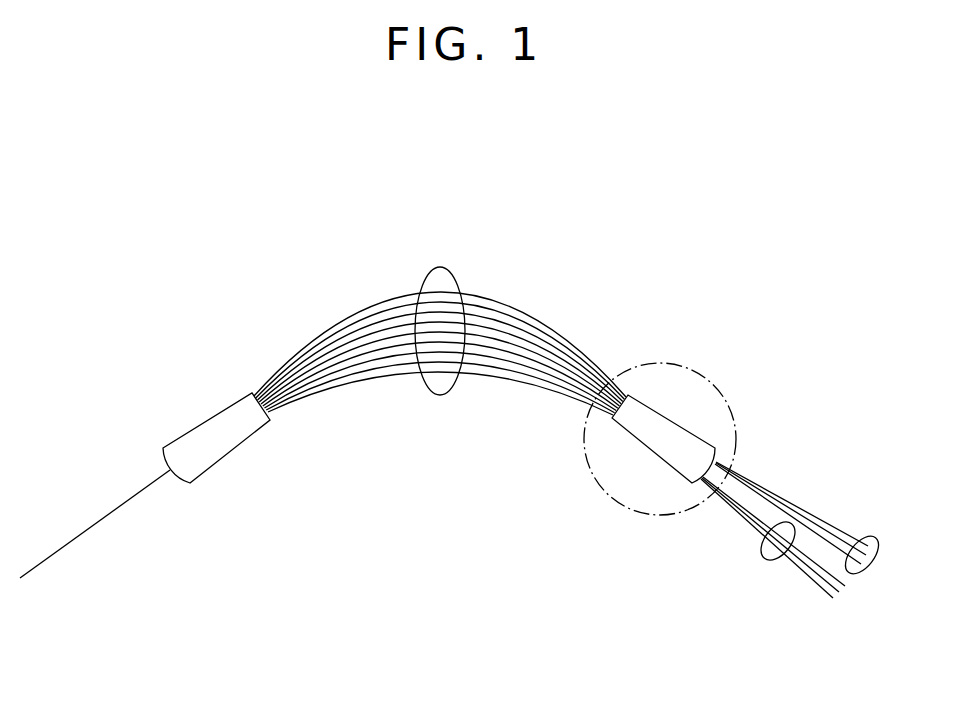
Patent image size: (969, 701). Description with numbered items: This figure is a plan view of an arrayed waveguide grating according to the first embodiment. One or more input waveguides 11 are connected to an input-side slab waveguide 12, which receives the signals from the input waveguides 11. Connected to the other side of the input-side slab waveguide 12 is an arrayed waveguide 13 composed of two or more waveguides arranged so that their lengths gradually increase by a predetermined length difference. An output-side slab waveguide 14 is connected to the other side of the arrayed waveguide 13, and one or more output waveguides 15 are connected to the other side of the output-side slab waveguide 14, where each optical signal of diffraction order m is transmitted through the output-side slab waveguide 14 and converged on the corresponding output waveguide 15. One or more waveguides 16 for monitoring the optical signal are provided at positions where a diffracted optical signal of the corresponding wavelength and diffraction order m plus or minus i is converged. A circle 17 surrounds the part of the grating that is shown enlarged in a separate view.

The input waveguide 11 is at (84, 532).
The input-side slab waveguide 12 is at (205, 422).
The arrayed waveguide 13 is at (440, 266).
The output-side slab waveguide 14 is at (668, 415).
The output waveguide 15 is at (763, 556).
The waveguide for monitoring the optical signal 16 is at (867, 537).
The circle 17 is at (622, 508).